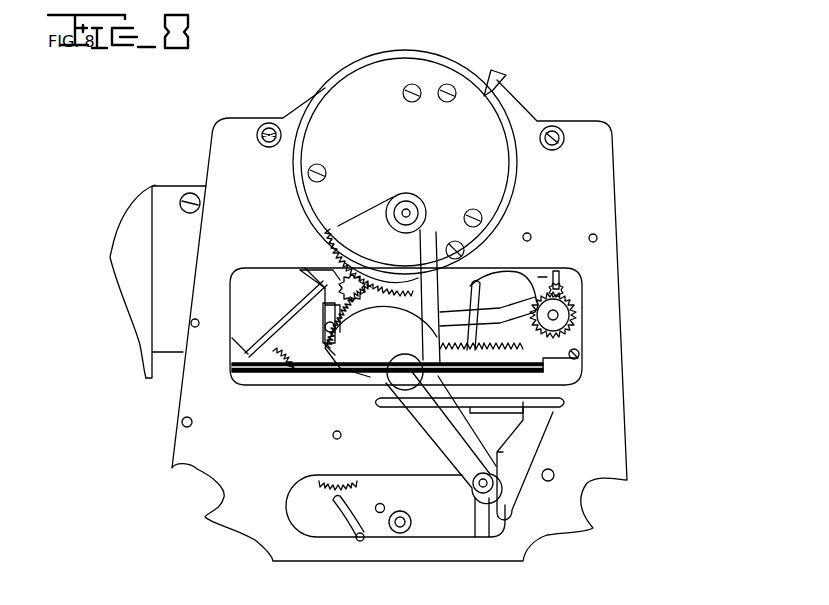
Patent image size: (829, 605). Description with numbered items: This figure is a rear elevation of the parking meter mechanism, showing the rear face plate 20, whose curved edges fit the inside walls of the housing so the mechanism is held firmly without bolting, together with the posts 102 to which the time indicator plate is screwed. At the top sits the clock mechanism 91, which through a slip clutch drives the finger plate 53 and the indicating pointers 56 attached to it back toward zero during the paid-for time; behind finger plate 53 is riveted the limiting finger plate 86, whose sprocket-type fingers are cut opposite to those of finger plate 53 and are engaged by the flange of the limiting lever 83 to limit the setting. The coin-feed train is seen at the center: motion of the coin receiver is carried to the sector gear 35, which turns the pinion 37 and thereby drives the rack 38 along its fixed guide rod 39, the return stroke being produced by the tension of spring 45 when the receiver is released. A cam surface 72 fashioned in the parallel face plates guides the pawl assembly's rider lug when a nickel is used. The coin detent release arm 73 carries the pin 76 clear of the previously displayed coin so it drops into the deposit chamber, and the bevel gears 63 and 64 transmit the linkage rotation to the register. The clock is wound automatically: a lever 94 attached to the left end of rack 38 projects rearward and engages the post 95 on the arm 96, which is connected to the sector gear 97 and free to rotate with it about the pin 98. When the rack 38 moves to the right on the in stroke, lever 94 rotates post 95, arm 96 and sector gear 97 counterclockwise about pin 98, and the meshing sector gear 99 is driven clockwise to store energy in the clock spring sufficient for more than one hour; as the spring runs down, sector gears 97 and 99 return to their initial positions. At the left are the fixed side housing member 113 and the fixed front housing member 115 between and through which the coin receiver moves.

The face plate 20 is at (583, 440).
The sector gear 35 is at (282, 360).
The pinion 37 is at (323, 495).
The rack 38 is at (560, 372).
The guide rod 39 is at (310, 372).
The spring 45 is at (497, 346).
The finger plate 53 is at (332, 272).
The indicating pointers 56 is at (508, 72).
The bevel gear 63 is at (565, 312).
The bevel gear 64 is at (562, 290).
The cam surface 72 is at (482, 348).
The coin detent release arm 73 is at (480, 292).
The detent pin 76 is at (359, 541).
The limiting lever 83 is at (500, 313).
The limiting finger plate 86 is at (312, 297).
The clock mechanism 91 is at (405, 162).
The lever 94 is at (525, 461).
The post 95 is at (477, 493).
The arm 96 is at (430, 428).
The sector gear 97 is at (381, 330).
The pin 98 is at (400, 380).
The sector gear 99 is at (382, 279).
The posts 102 is at (269, 122).
The side housing member 113 is at (173, 342).
The front housing member 115 is at (131, 272).